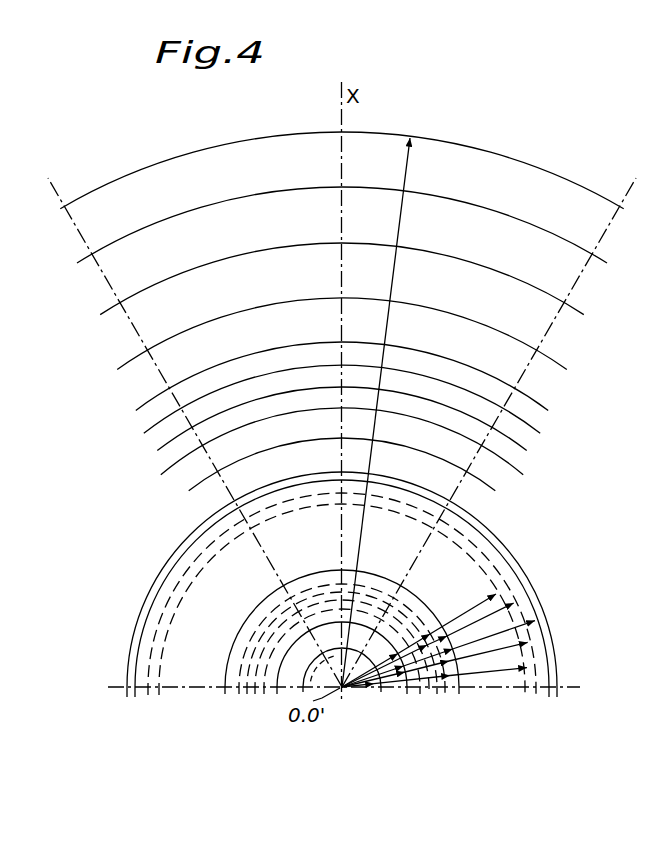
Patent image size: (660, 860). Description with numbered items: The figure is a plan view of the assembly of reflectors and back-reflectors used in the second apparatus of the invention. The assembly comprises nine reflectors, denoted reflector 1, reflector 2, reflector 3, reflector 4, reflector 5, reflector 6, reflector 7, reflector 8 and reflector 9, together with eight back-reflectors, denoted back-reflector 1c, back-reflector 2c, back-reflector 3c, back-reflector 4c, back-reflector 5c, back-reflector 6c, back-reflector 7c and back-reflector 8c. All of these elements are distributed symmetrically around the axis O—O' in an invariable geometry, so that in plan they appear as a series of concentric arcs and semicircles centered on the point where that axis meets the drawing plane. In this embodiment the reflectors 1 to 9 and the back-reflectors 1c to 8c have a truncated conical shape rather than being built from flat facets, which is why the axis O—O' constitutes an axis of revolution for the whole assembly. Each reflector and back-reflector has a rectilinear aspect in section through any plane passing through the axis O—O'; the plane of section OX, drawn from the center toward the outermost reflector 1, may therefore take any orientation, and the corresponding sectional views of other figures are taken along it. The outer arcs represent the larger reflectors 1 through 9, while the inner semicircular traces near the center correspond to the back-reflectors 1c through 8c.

The reflector 1 is at (524, 188).
The reflector 2 is at (510, 250).
The reflector 3 is at (484, 303).
The reflector 4 is at (468, 347).
The reflector 5 is at (459, 379).
The reflector 6 is at (452, 402).
The reflector 7 is at (447, 422).
The reflector 8 is at (441, 447).
The reflector 9 is at (430, 477).
The back-reflector 1c is at (366, 675).
The back-reflector 2c is at (430, 667).
The back-reflector 3c is at (390, 677).
The back-reflector 4c is at (492, 627).
The back-reflector 5c is at (473, 602).
The back-reflector 6c is at (503, 645).
The back-reflector 7c is at (507, 662).
The back-reflector 8c is at (498, 672).